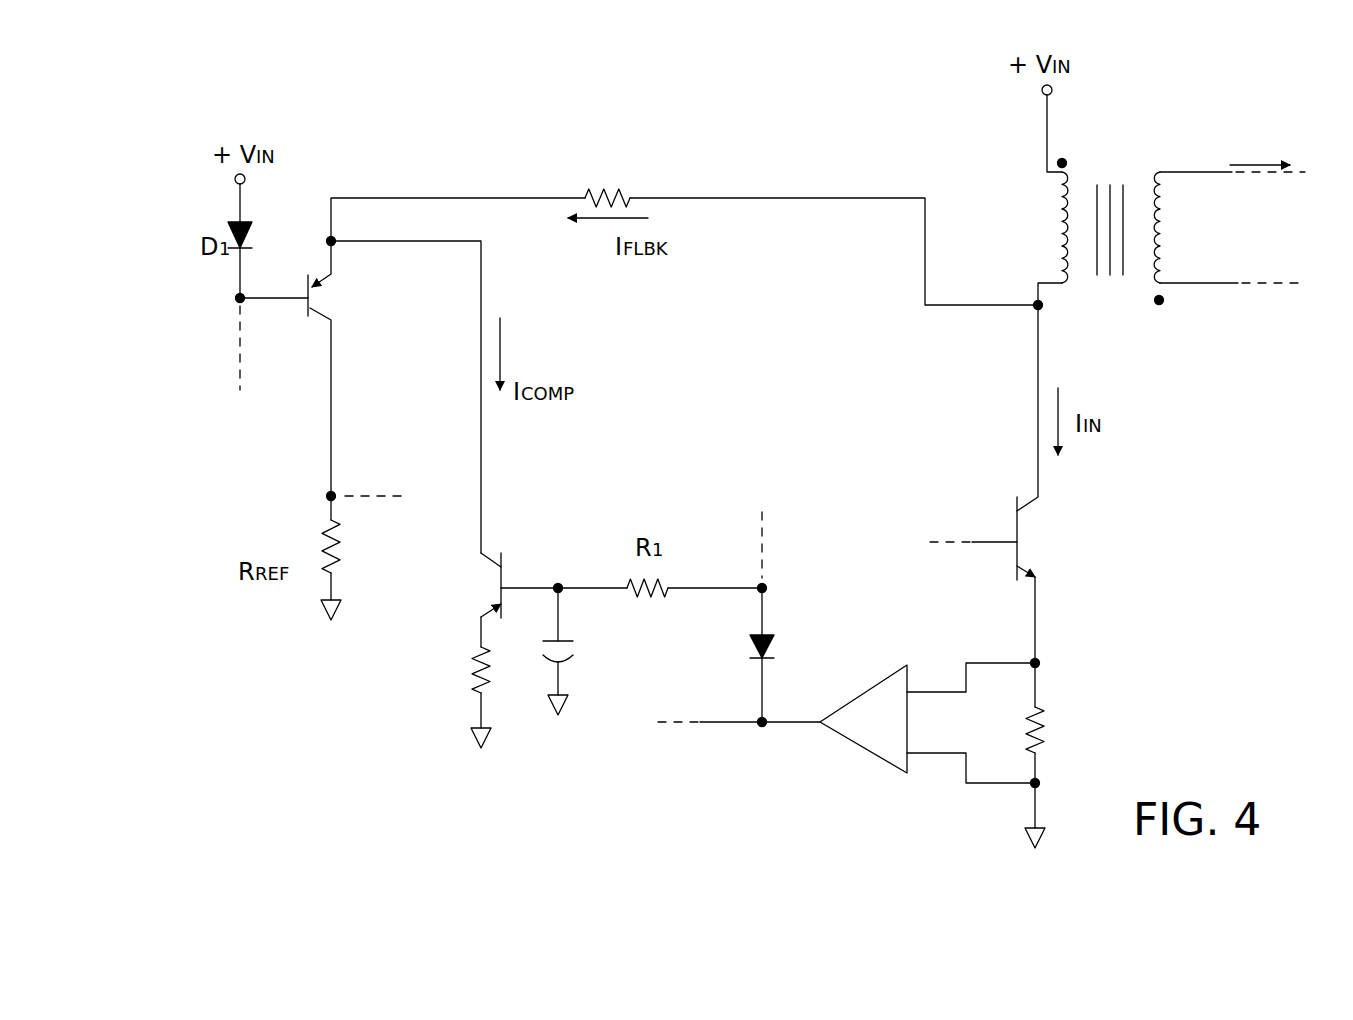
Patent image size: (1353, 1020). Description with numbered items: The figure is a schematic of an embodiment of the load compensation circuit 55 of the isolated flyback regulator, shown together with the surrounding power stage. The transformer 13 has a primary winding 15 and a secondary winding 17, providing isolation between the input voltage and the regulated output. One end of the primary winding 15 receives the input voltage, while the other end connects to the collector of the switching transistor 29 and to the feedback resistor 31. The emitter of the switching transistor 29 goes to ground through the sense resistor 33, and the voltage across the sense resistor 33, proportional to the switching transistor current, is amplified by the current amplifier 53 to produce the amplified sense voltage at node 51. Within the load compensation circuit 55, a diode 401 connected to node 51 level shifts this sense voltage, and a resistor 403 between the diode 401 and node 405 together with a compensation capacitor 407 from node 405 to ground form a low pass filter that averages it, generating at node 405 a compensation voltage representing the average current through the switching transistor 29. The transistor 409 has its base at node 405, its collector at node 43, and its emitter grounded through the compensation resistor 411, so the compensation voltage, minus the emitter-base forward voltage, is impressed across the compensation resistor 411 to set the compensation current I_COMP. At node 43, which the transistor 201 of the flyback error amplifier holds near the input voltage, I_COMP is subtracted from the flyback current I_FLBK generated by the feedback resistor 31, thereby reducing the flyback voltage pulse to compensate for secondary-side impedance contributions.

The transformer 13 is at (1162, 232).
The primary winding 15 is at (1063, 285).
The secondary winding 17 is at (1162, 285).
The switching transistor 29 is at (1027, 500).
The feedback resistor 31 is at (628, 198).
The sense resistor 33 is at (1040, 716).
The node 43 is at (336, 240).
The node 51 is at (761, 725).
The current amplifier 53 is at (874, 752).
The load compensation circuit 55 is at (366, 783).
The transistor 201 is at (329, 310).
The diode 401 is at (754, 646).
The resistor 403 is at (668, 588).
The node 405 is at (559, 586).
The compensation capacitor 407 is at (562, 645).
The transistor 409 is at (483, 553).
The compensation resistor 411 is at (470, 682).